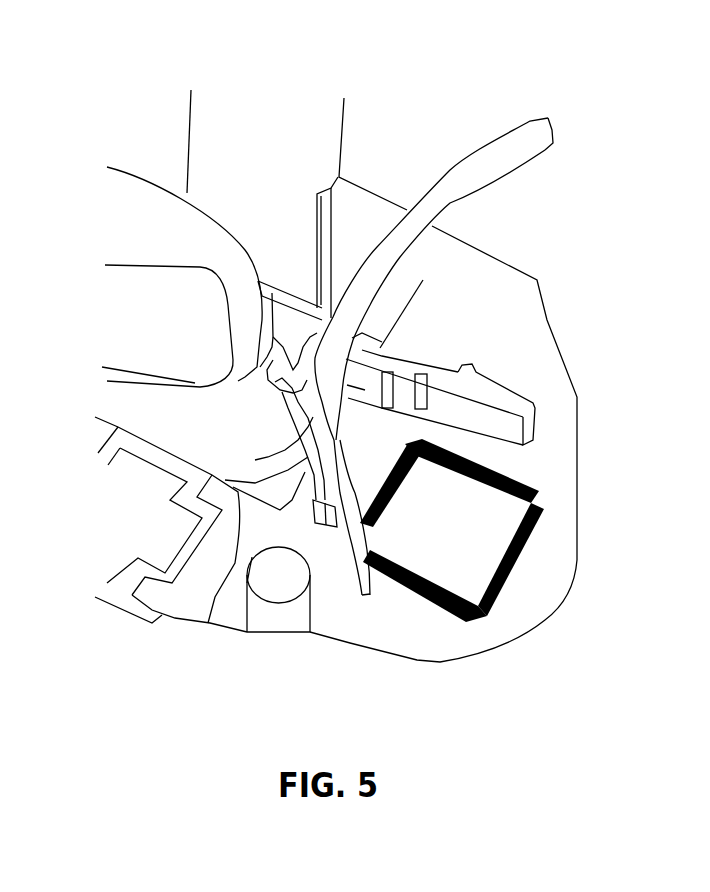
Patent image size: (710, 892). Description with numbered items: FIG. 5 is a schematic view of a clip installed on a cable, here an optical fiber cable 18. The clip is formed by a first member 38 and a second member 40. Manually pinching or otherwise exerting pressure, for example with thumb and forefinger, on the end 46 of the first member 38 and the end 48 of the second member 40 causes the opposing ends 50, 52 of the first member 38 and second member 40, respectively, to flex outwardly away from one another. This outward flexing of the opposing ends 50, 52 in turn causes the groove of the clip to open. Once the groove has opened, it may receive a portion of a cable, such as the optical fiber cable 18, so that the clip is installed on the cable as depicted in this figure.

The optical fiber cable 18 is at (530, 118).
The first member 38 is at (274, 398).
The second member 40 is at (388, 357).
The end of first member 46 is at (270, 362).
The end of second member 48 is at (275, 290).
The opposing end of first member 50 is at (361, 547).
The opposing end of second member 52 is at (474, 384).